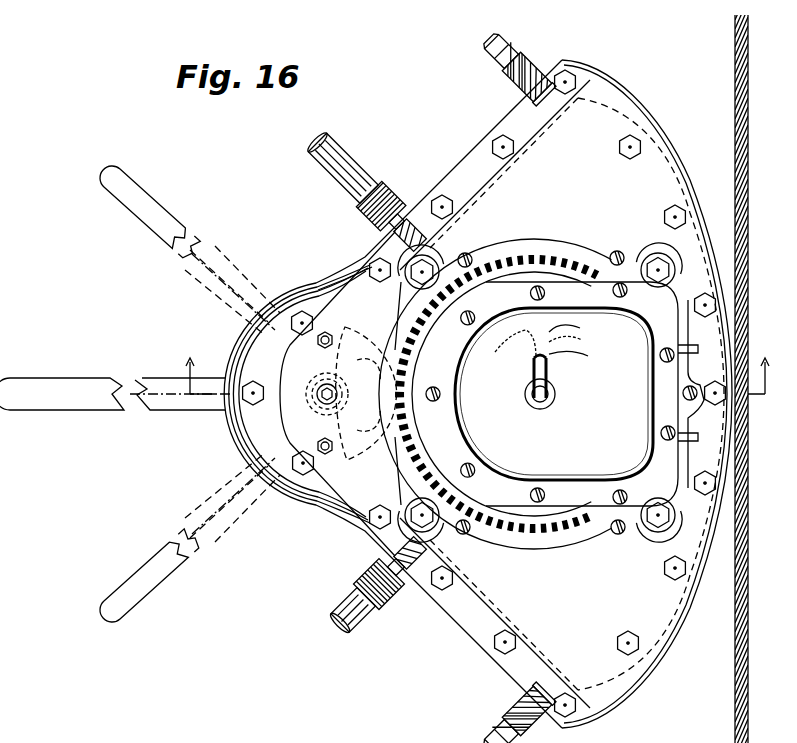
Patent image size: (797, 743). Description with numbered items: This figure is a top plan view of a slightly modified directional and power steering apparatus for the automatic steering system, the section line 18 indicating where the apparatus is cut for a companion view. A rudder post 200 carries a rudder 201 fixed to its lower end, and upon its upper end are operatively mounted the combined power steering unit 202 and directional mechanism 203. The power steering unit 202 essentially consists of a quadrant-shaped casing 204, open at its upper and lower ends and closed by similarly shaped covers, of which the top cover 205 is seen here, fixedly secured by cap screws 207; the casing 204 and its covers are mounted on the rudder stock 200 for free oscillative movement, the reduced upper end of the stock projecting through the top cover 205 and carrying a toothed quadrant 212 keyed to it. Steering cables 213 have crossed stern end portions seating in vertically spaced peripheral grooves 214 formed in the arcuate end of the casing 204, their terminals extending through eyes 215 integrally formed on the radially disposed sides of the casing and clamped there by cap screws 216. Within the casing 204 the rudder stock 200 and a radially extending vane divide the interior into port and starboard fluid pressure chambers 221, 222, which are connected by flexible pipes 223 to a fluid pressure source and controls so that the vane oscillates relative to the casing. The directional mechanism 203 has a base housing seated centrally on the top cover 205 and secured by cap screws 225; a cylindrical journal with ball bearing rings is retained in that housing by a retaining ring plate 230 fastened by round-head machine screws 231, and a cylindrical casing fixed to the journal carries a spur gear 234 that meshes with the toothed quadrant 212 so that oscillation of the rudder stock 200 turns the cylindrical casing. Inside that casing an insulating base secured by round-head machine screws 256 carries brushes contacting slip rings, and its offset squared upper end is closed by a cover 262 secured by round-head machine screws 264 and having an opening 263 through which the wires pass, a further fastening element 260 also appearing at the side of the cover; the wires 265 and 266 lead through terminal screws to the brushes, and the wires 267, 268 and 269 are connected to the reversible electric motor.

The section line 18- 18 is at (478, 366).
The rudder post 200 is at (300, 405).
The rudder 201 is at (127, 207).
The power steering unit 202 is at (320, 537).
The directional mechanism 203 is at (593, 237).
The casing 204 is at (285, 495).
The top cover 205 is at (473, 610).
The cap screws 207 is at (496, 142).
The toothed quadrant 212 is at (335, 293).
The steering cables 213 is at (735, 47).
The peripheral grooves 214 is at (628, 110).
The eyes 215 is at (535, 62).
The cap screws 216 is at (496, 45).
The port fluid pressure chamber 221 is at (490, 195).
The starboard fluid pressure chamber 222 is at (602, 665).
The flexible pipes 223 is at (317, 160).
The cap screws 225 is at (433, 270).
The retaining ring plate 230 is at (555, 542).
The round-head machine screws 231 is at (478, 530).
The spur gear 234 is at (548, 258).
The round-head machine screws 256 is at (365, 350).
The screws 260 is at (684, 349).
The cover 262 is at (588, 312).
The opening 263 is at (546, 409).
The round-head machine screws 264 is at (580, 458).
The wire 265 is at (500, 350).
The wire 266 is at (532, 348).
The wire 267 is at (580, 328).
The wire 268 is at (582, 340).
The wire 269 is at (588, 356).